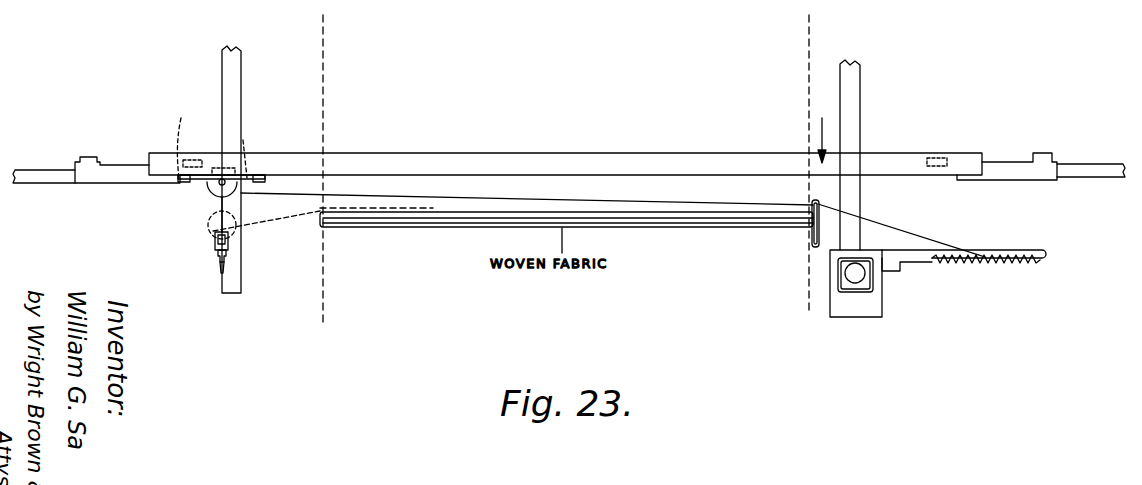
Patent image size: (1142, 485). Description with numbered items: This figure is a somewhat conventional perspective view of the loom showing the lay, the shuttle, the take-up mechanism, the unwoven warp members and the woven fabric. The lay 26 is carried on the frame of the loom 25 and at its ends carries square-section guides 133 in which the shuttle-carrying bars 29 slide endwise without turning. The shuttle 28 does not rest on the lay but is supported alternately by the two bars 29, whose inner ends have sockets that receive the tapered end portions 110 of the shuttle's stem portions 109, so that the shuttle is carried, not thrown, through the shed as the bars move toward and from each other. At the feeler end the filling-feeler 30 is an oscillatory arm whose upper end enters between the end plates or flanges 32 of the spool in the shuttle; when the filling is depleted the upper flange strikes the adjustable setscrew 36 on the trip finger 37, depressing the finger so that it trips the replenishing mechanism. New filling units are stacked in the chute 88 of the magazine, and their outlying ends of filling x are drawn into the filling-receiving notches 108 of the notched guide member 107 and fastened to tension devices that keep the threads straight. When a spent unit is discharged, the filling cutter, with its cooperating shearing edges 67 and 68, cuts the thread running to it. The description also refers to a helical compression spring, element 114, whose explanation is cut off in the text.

The frame of the loom 25 is at (242, 291).
The lay 26 is at (562, 153).
The shuttle 28 is at (215, 160).
The shuttle-carrying bars 29 is at (35, 170).
The filling-feeler 30 is at (229, 239).
The end plates or flanges of the operating spool 32 is at (222, 202).
The adjustable setscrew 36 is at (218, 247).
The trip finger 37 is at (221, 268).
The shearing edge 67 is at (808, 236).
The shearing edge 68 is at (821, 205).
The chute 88 is at (856, 289).
The notched guide member 107 is at (910, 263).
The filling-receiving notches 108 is at (1010, 258).
The stem portions 109 is at (561, 139).
The end portions 110 is at (178, 181).
The lug 114 is at (186, 184).
The guides 133 is at (122, 165).
The filling x is at (905, 322).